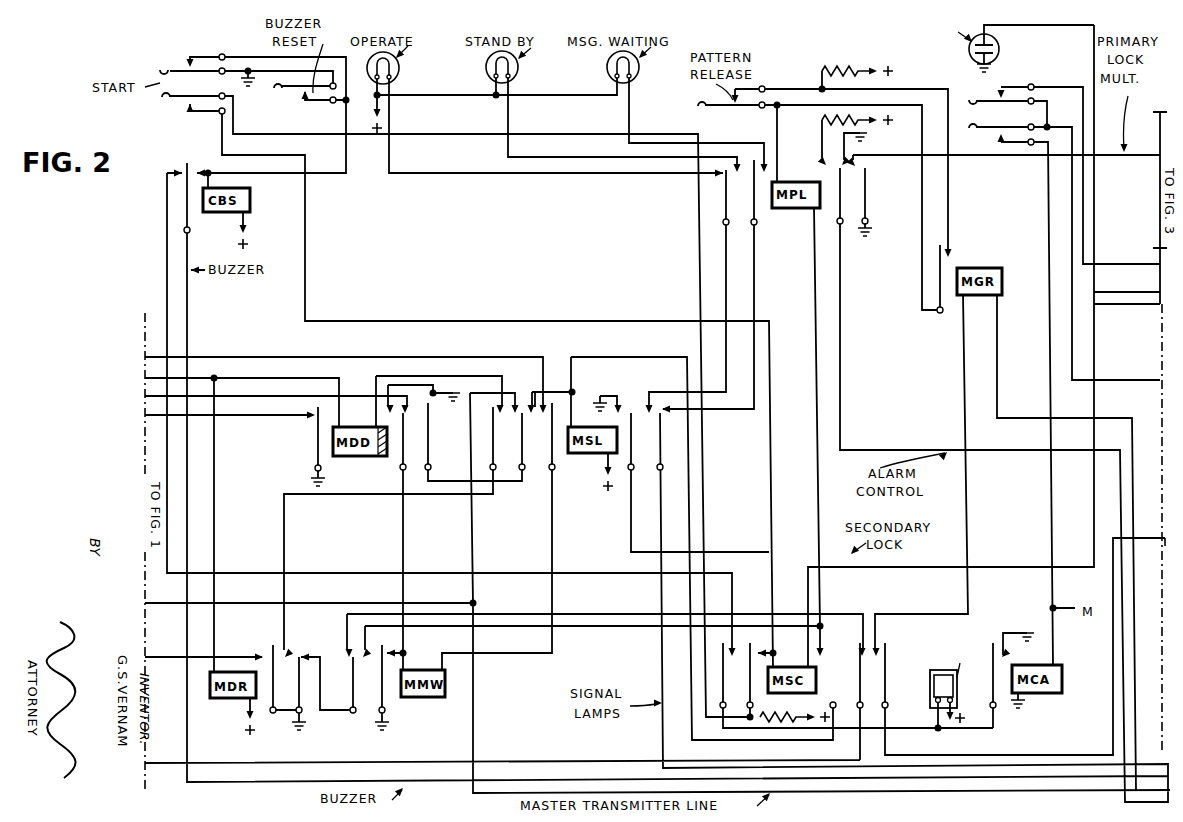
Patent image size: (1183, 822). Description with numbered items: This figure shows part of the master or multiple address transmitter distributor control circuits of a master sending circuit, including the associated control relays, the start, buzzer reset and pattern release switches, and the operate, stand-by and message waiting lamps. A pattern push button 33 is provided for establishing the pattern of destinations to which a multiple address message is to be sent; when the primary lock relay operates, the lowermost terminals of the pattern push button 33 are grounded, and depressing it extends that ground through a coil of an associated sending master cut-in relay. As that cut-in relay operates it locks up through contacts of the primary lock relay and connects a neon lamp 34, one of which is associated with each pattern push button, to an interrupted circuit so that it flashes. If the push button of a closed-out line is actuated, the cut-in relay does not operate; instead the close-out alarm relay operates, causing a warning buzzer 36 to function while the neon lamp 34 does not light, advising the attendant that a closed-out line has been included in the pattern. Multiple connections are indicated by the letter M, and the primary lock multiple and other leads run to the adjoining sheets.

The pattern push button 33 is at (1003, 116).
The neon lamp 34 is at (967, 59).
The warning buzzer 36 is at (929, 687).